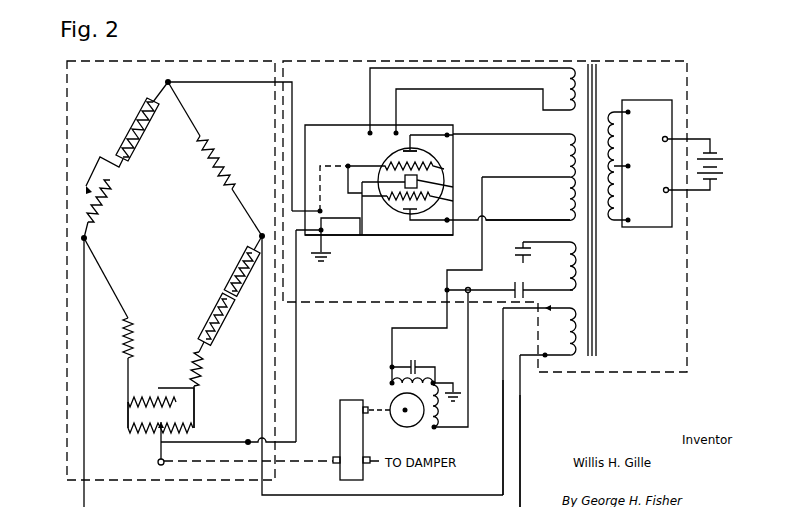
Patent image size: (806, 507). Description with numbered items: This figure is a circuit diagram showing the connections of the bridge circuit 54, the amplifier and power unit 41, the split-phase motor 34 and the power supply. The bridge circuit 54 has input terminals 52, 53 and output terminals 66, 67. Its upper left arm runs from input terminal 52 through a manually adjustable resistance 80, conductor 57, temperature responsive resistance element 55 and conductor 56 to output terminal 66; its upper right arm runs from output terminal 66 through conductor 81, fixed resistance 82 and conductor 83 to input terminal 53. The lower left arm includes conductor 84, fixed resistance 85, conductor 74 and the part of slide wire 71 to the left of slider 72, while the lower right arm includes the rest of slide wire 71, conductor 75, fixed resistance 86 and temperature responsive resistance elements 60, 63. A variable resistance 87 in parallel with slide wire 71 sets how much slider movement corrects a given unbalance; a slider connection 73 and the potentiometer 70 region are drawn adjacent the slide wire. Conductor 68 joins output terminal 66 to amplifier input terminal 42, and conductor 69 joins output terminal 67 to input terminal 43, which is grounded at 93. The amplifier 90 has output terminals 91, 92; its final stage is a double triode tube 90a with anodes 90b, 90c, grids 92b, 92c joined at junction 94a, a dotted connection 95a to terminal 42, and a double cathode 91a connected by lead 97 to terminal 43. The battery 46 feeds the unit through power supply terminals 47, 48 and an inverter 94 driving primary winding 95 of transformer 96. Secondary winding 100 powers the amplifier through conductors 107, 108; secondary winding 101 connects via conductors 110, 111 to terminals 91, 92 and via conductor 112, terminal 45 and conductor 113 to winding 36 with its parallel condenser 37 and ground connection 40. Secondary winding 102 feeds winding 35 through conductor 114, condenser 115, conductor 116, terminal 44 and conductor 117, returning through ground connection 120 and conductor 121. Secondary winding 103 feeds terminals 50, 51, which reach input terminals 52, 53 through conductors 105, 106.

The bridge circuit 54 is at (232, 58).
The amplifier and power unit 41 is at (402, 58).
The output terminal 66 is at (172, 82).
The conductor 68 is at (294, 84).
The conductor 81 is at (190, 110).
The fixed resistance 82 is at (226, 172).
The conductor 83 is at (242, 200).
The conductor 56 is at (159, 104).
The temperature responsive resistance element 55 is at (141, 141).
The conductor 57 is at (124, 168).
The manually adjustable resistance 80 is at (104, 201).
The input terminal 52 is at (88, 238).
The input terminal 53 is at (256, 236).
The conductor 84 is at (108, 282).
The fixed resistance 85 is at (123, 340).
The temperature responsive resistance element 63 is at (236, 277).
The temperature responsive resistance element 60 is at (212, 320).
The fixed resistance 86 is at (202, 373).
The variable resistance 87 is at (158, 393).
The conductor 75 is at (195, 414).
The potentiometer 70 is at (208, 424).
The output terminal 67 is at (248, 439).
The conductor 74 is at (128, 416).
The slide wire 71 is at (155, 428).
The slider 72 is at (158, 443).
The conductor 73 is at (208, 445).
The conductor 69 is at (297, 322).
The conductor 107 is at (459, 67).
The conductor 108 is at (464, 89).
The secondary winding 100 is at (566, 88).
The output terminal 91 is at (453, 128).
The conductor 110 is at (497, 136).
The grid 92b is at (440, 150).
The amplifier 90 is at (408, 240).
The anode 90b is at (405, 150).
The junction 94a is at (352, 161).
The dotted line connection 95a is at (334, 188).
The double triode tube 90a is at (445, 168).
The double cathode 91a is at (443, 185).
The grid 92c is at (434, 203).
The anode 90c is at (408, 214).
The input terminal 42 is at (322, 211).
The input terminal 43 is at (323, 230).
The ground 93 is at (332, 258).
The lead 97 is at (349, 242).
The output terminal 92 is at (447, 236).
The secondary winding 101 is at (566, 160).
The conductor 112 is at (543, 177).
The conductor 111 is at (538, 218).
The conductor 121 is at (566, 240).
The ground connection 120 is at (517, 250).
The secondary winding 102 is at (570, 256).
The conductor 116 is at (483, 288).
The condenser 115 is at (524, 281).
The conductor 114 is at (538, 290).
The output terminal 45 is at (445, 290).
The output terminal 44 is at (470, 283).
The terminal 51 is at (546, 308).
The conductor 113 is at (405, 328).
The conductor 117 is at (469, 343).
The secondary winding 103 is at (570, 330).
The condenser 37 is at (412, 360).
The ground connection 40 is at (452, 384).
The winding 35 is at (440, 412).
The winding 36 is at (393, 404).
The split-phase motor 34 is at (368, 387).
The conductor 106 is at (501, 402).
The terminal 50 is at (546, 357).
The conductor 105 is at (521, 401).
The transformer 96 is at (596, 356).
The primary winding 95 is at (604, 226).
The inverter 94 is at (645, 229).
The power supply terminal 47 is at (663, 137).
The power supply terminal 48 is at (665, 188).
The battery 46 is at (717, 151).